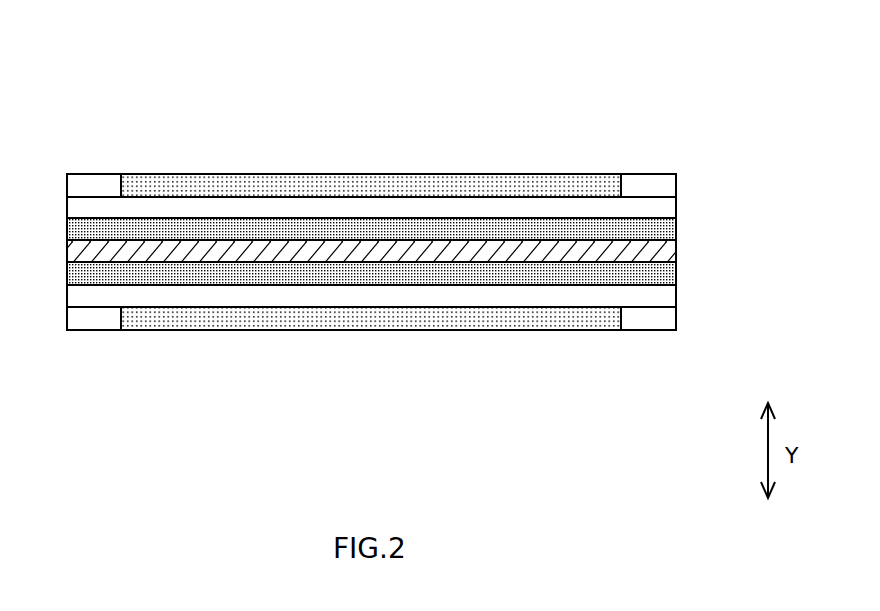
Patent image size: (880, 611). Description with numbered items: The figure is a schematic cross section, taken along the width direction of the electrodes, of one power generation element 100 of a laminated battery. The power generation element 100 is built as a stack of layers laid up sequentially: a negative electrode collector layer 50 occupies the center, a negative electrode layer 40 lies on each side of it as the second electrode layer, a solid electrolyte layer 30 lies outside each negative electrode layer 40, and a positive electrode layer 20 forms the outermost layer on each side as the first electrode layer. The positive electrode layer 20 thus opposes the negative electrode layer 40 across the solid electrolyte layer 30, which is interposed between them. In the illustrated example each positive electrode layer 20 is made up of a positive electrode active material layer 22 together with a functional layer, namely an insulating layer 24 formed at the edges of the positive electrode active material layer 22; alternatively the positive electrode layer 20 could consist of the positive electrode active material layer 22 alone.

The power generation element 100 is at (543, 90).
The positive electrode layer 20 is at (217, 173).
The positive electrode active material layer 22 is at (570, 173).
The insulating layer 24 is at (90, 184).
The solid electrolyte layer 30 is at (672, 208).
The negative electrode layer 40 is at (675, 230).
The negative electrode collector layer 50 is at (673, 253).